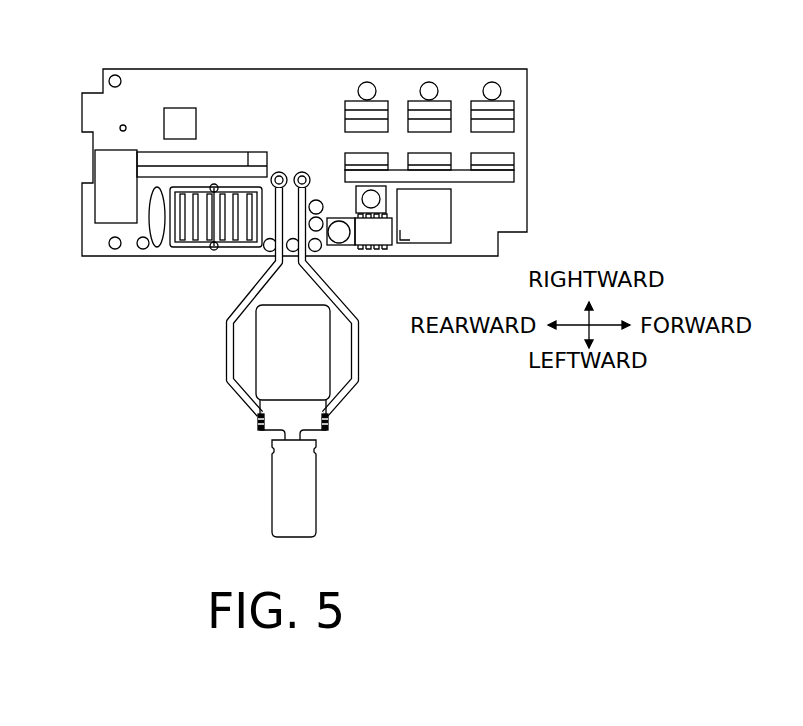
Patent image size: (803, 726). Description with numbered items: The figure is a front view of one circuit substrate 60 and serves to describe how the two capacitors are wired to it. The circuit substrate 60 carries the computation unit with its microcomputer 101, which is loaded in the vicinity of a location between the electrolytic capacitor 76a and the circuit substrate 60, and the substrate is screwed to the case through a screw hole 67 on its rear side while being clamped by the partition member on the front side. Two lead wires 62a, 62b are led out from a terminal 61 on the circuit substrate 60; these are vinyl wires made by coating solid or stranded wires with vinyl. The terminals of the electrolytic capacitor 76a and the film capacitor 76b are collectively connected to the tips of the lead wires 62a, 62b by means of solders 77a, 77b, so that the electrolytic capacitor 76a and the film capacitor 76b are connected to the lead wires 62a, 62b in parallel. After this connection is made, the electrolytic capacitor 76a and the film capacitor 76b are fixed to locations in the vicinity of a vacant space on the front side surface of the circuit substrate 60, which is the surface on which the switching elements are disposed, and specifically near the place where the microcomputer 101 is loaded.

The circuit substrate 60 is at (268, 103).
The microcomputer 101 is at (177, 115).
The screw hole 67 is at (120, 127).
The terminal 61 is at (282, 167).
The lead wire 62a is at (358, 370).
The lead wire 62b is at (228, 360).
The film capacitor 76b is at (312, 328).
The electrolytic capacitor 76a is at (303, 480).
The solder 77a is at (341, 428).
The solder 77b is at (247, 426).